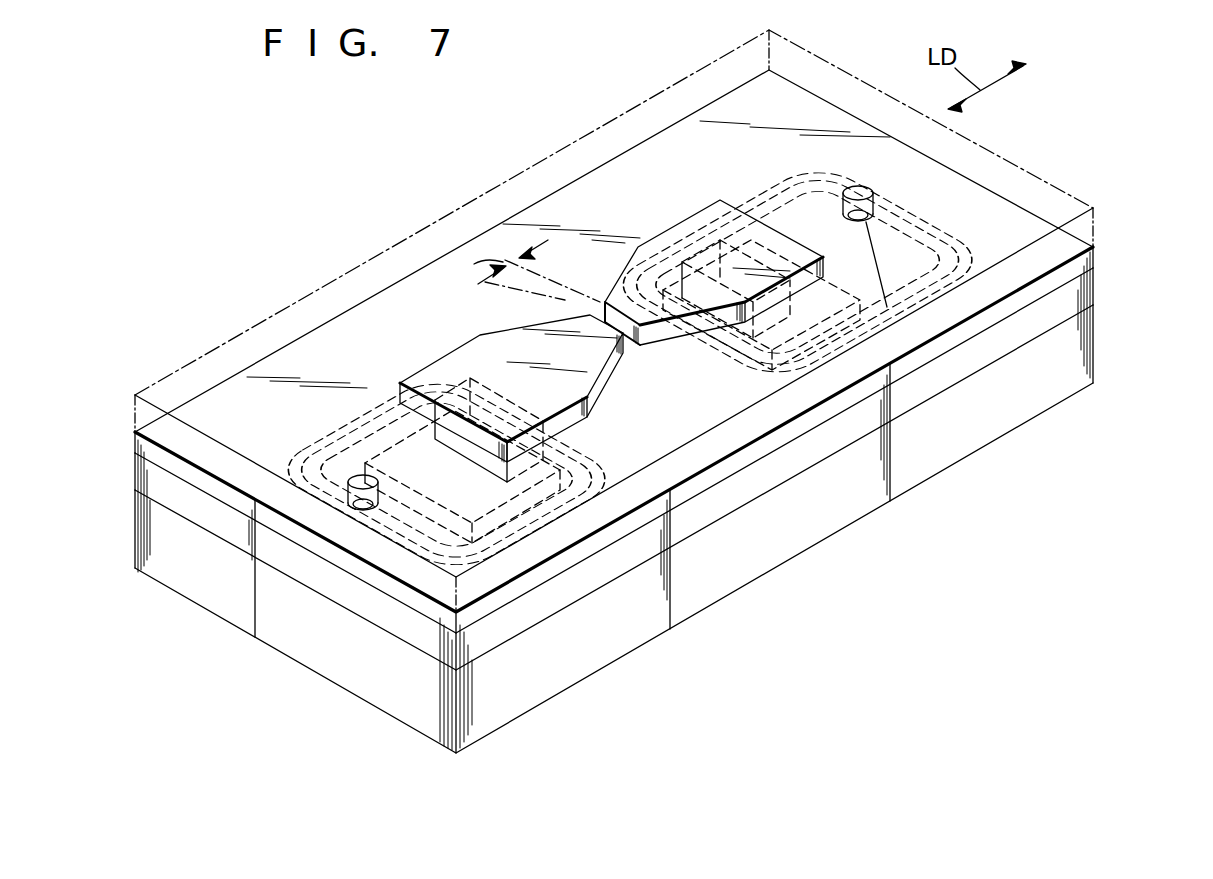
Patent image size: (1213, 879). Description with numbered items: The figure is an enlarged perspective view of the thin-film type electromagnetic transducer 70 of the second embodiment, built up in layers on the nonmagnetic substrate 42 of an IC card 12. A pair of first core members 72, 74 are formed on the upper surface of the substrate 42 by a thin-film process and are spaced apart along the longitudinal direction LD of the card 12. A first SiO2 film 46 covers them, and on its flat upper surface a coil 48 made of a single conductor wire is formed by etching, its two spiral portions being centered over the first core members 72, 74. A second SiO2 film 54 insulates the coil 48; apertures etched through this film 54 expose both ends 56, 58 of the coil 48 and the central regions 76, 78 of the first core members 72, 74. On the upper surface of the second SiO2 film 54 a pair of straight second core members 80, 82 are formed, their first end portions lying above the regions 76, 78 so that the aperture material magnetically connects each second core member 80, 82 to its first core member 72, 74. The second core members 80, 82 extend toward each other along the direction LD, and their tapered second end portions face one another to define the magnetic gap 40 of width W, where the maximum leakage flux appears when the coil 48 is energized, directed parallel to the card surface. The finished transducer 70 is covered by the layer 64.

The IC card 12 is at (1120, 277).
The magnetic gap 40 is at (630, 347).
The nonmagnetic substrate 42 is at (1085, 342).
The first SiO2 film 46 is at (1085, 295).
The coil 48 is at (952, 232).
The second SiO2 film 54 is at (1093, 250).
The end of coil 56 is at (353, 478).
The end of coil 58 is at (863, 222).
The layer 64 is at (1095, 213).
The thin-film type electromagnetic transducer 70 is at (574, 214).
The first core member 72 is at (437, 495).
The first core member 74 is at (837, 288).
The region of first core member 76 is at (450, 447).
The region of first core member 78 is at (790, 305).
The second core member 80 is at (510, 347).
The second core member 82 is at (772, 237).